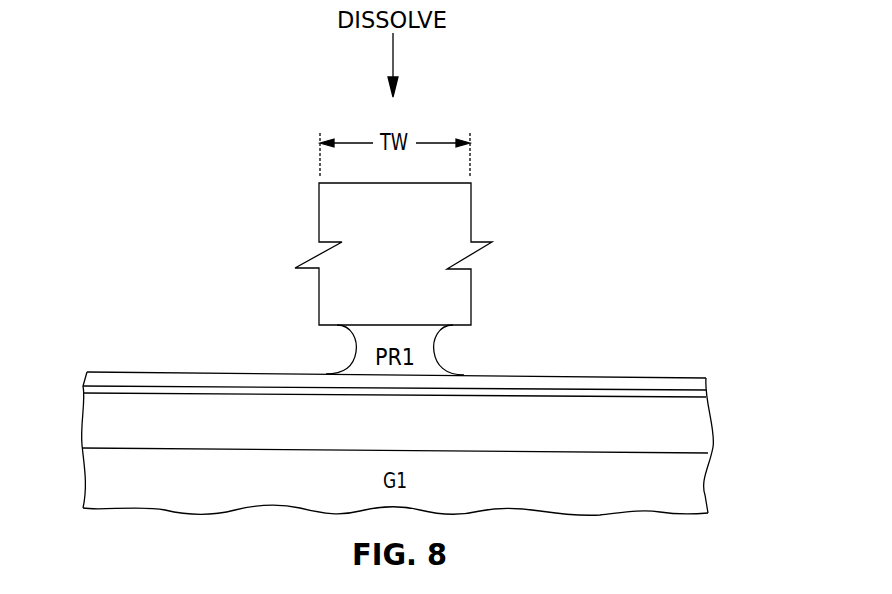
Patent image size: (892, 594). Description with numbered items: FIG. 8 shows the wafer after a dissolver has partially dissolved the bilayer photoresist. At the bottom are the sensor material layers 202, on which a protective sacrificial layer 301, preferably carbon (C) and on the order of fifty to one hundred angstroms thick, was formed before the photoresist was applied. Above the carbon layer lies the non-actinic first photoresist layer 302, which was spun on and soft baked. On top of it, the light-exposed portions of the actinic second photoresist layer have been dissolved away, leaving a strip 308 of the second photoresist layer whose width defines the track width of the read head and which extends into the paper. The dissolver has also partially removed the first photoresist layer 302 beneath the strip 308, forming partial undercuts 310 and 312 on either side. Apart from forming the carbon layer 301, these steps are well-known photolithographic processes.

The strip of the second photoresist layer 308 is at (455, 209).
The partial undercut 310 is at (337, 349).
The partial undercut 312 is at (448, 352).
The first photoresist layer 302 is at (677, 380).
The protective sacrificial layer 301 is at (705, 393).
The sensor material layers 202 is at (697, 428).
The carbon C is at (180, 387).